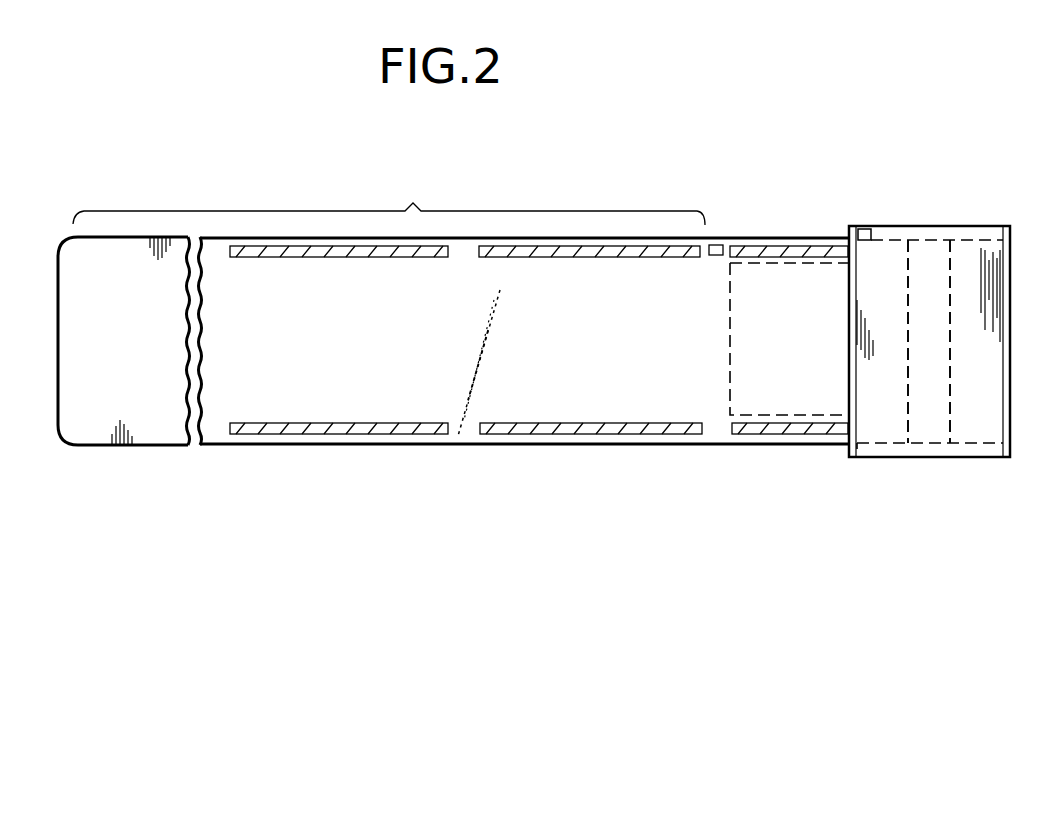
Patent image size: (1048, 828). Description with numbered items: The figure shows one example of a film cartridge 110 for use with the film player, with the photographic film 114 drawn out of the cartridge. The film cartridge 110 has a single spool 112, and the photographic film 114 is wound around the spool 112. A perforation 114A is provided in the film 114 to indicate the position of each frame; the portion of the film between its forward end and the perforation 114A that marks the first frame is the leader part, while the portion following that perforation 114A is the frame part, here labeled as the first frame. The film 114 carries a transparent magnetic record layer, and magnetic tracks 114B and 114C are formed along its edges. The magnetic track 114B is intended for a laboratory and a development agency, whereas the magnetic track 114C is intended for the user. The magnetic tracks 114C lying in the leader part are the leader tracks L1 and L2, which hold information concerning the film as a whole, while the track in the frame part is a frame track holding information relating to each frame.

The film cartridge 110 is at (865, 231).
The spool 112 is at (954, 286).
The photographic film 114 is at (783, 239).
The perforation 114A is at (718, 244).
The magnetic track 114B is at (426, 258).
The magnetic track 114C is at (427, 434).
The leader track L1 is at (320, 434).
The leader track L2 is at (530, 434).